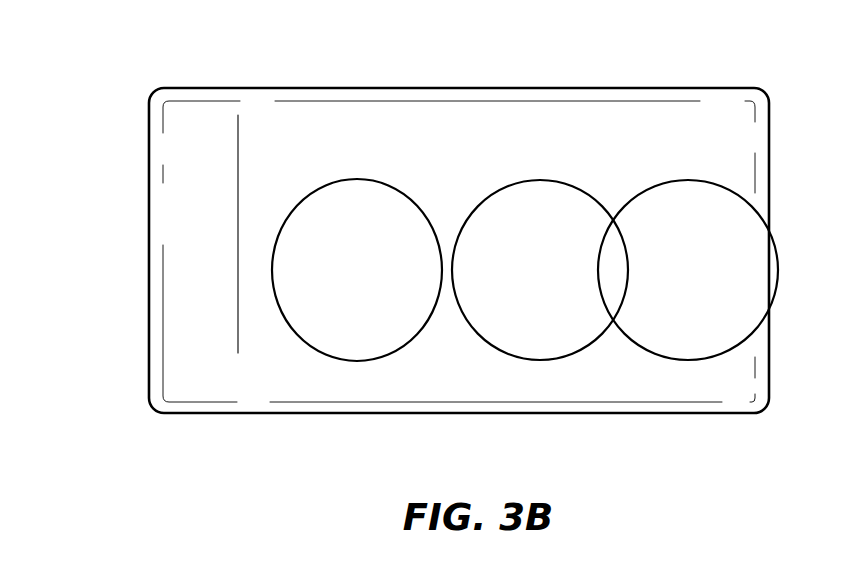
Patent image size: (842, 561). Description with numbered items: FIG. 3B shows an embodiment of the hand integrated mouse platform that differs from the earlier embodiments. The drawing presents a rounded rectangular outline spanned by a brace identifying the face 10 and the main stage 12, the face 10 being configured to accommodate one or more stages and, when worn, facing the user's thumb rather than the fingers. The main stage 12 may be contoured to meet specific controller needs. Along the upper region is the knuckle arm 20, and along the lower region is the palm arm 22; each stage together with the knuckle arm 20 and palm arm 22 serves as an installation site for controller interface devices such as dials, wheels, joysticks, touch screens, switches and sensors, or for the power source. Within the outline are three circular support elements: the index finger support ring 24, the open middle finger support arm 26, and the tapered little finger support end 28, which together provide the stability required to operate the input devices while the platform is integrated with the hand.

The face 10 is at (125, 87).
The main stage 12 is at (459, 250).
The knuckle arm 20 is at (463, 152).
The palm arm 22 is at (445, 375).
The index finger support ring 24 is at (357, 252).
The middle finger support arm 26 is at (533, 250).
The little finger support end 28 is at (695, 322).